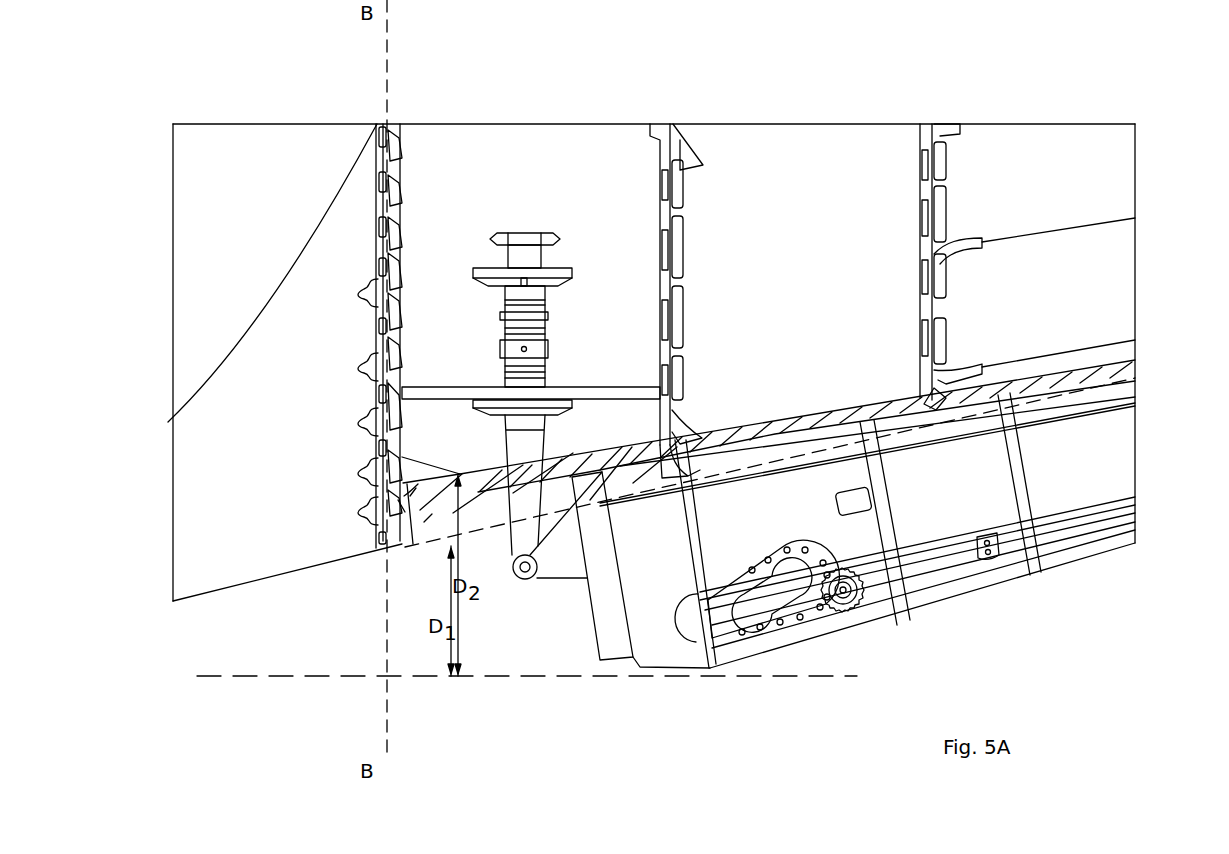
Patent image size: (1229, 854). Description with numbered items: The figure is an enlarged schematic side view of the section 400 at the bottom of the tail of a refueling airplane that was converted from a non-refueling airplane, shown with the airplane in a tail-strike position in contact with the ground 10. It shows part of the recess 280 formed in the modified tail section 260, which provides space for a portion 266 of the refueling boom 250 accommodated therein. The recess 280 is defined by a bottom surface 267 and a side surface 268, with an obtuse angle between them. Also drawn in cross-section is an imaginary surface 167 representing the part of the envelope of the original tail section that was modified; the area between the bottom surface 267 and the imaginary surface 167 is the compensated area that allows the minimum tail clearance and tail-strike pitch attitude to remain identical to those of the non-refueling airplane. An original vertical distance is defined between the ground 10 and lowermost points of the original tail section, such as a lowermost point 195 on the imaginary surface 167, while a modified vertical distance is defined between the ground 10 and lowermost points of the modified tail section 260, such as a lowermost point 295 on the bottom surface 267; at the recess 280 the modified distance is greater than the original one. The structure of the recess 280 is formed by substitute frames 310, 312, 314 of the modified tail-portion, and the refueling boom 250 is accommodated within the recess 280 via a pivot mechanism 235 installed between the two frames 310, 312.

The section 400 is at (533, 104).
The frame 310 is at (388, 124).
The frame 312 is at (675, 124).
The frame 314 is at (940, 124).
The modified tail section 260 is at (806, 160).
The portion of the refueling boom 266 is at (880, 427).
The lowermost point 295 is at (458, 471).
The side surface 268 is at (400, 545).
The bottom surface 267 is at (405, 512).
The recess 280 is at (414, 492).
The imaginary surface 167 is at (428, 522).
The lowermost point 195 is at (523, 465).
The pivot mechanism 235 is at (555, 567).
The refueling boom 250 is at (930, 573).
The ground 10 is at (785, 677).